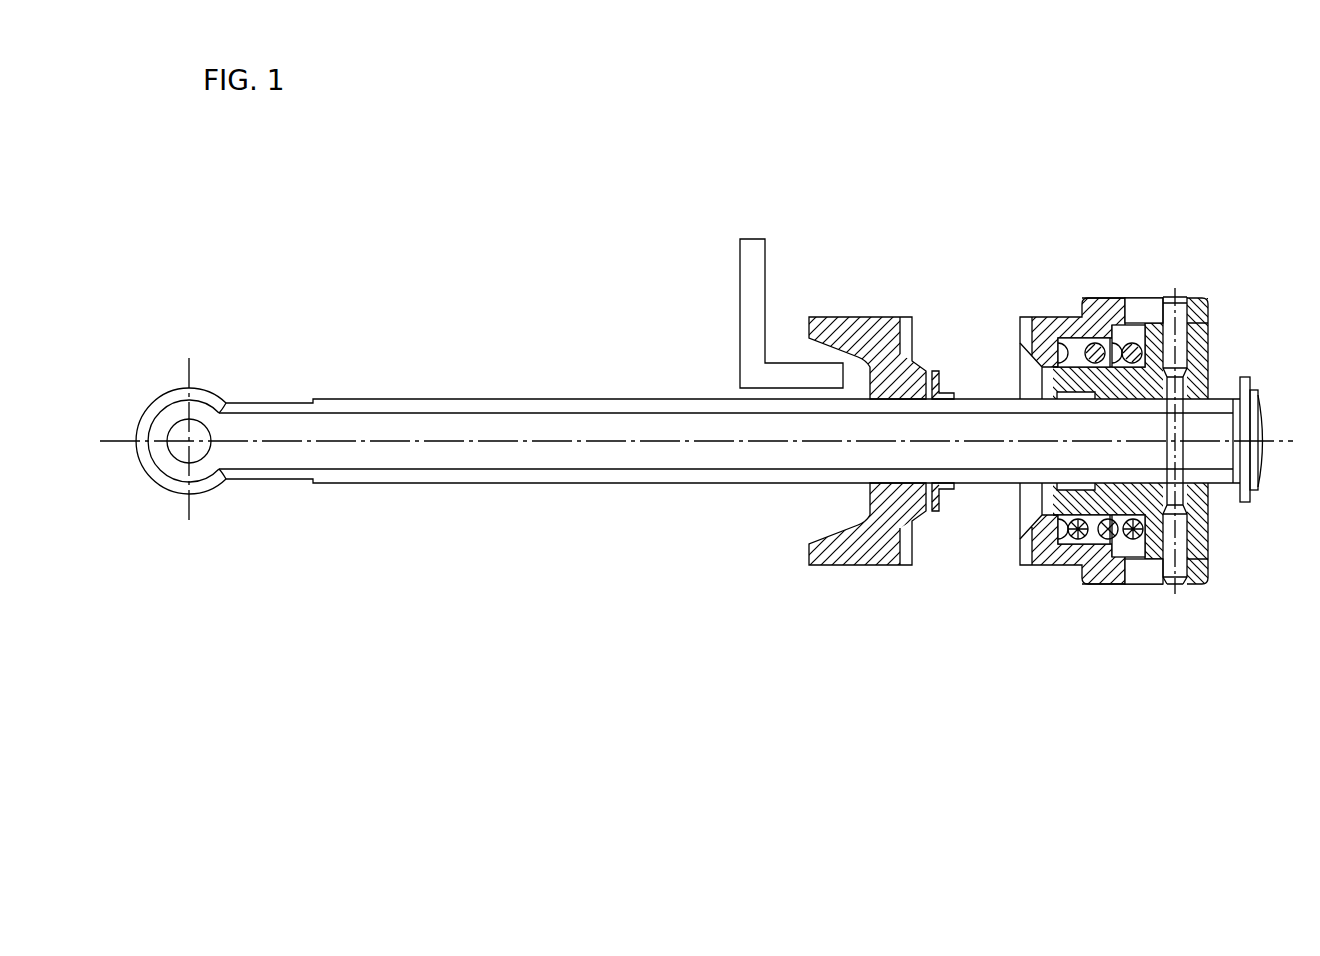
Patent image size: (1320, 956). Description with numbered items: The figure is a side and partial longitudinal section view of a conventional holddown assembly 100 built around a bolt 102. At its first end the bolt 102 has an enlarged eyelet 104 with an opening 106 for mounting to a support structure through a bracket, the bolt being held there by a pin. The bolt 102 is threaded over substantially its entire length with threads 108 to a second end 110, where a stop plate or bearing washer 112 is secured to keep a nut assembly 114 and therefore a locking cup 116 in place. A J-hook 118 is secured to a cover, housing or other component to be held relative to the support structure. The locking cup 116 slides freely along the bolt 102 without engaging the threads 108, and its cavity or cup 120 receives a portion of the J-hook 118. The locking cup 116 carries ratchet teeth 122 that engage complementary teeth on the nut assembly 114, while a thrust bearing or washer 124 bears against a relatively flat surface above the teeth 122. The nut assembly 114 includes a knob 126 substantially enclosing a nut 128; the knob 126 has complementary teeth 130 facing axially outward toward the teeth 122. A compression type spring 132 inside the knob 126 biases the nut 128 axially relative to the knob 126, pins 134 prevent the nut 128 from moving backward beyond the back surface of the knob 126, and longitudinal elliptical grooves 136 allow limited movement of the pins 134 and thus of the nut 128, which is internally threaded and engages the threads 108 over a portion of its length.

The holddown assembly 100 is at (431, 225).
The bolt 102 is at (343, 353).
The eyelet 104 is at (176, 341).
The opening 106 is at (198, 452).
The threads 108 is at (463, 407).
The second end 110 is at (1271, 313).
The stop plate or bearing washer 112 is at (1247, 503).
The nut assembly 114 is at (1076, 210).
The locking cup 116 is at (857, 239).
The J-hook 118 is at (733, 225).
The cavity or cup 120 is at (823, 508).
The ratchet teeth 122 is at (912, 570).
The thrust bearing or washer 124 is at (943, 538).
The knob 126 is at (936, 372).
The nut 128 is at (1217, 330).
The complementary teeth 130 is at (1025, 563).
The compression spring 132 is at (1070, 350).
The pins 134 is at (1168, 303).
The longitudinal elliptical grooves 136 is at (1135, 305).